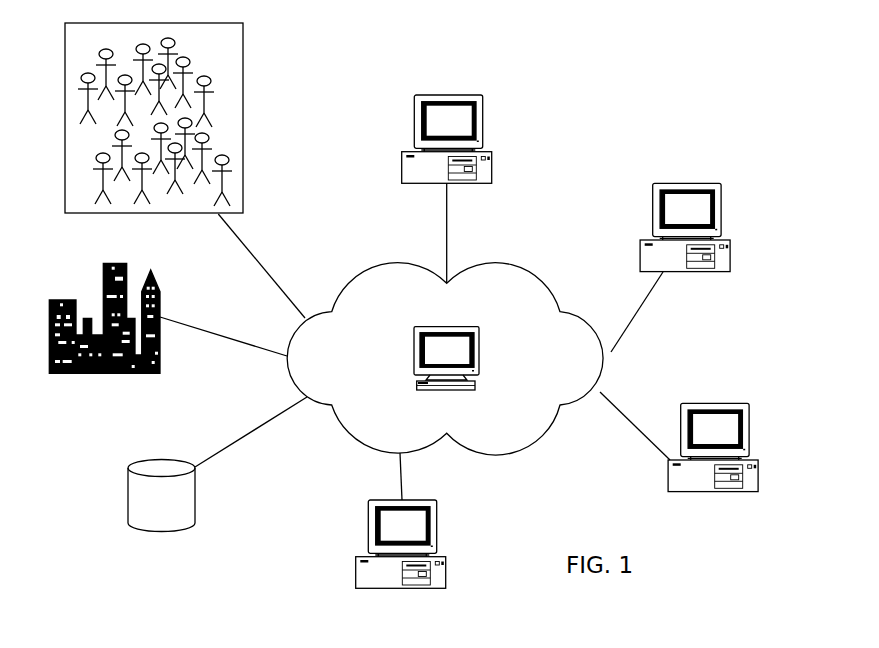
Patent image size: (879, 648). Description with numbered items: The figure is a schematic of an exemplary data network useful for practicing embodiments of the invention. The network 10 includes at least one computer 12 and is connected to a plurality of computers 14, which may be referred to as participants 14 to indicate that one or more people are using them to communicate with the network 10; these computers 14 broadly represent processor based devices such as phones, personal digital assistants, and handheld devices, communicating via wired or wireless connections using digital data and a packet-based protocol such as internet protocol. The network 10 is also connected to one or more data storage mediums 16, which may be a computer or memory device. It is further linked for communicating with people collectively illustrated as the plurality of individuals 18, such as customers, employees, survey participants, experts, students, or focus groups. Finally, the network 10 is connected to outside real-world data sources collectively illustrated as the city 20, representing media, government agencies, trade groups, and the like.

The network 10 is at (503, 295).
The computer 12 is at (414, 336).
The computers 14 is at (414, 118).
The data storage mediums 16 is at (138, 464).
The plurality of individuals 18 is at (70, 106).
The city 20 is at (104, 264).